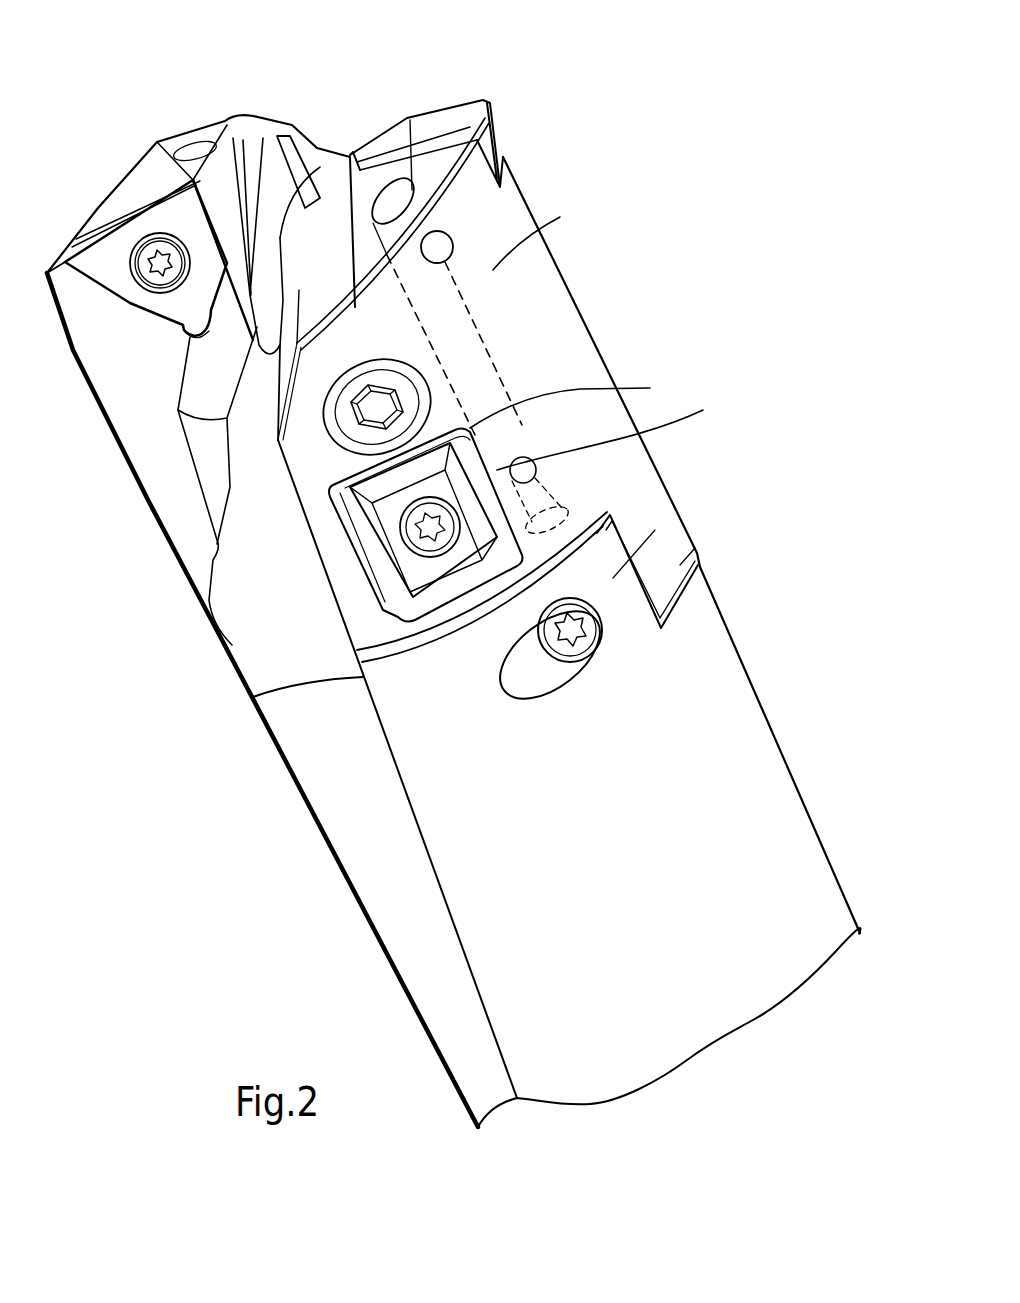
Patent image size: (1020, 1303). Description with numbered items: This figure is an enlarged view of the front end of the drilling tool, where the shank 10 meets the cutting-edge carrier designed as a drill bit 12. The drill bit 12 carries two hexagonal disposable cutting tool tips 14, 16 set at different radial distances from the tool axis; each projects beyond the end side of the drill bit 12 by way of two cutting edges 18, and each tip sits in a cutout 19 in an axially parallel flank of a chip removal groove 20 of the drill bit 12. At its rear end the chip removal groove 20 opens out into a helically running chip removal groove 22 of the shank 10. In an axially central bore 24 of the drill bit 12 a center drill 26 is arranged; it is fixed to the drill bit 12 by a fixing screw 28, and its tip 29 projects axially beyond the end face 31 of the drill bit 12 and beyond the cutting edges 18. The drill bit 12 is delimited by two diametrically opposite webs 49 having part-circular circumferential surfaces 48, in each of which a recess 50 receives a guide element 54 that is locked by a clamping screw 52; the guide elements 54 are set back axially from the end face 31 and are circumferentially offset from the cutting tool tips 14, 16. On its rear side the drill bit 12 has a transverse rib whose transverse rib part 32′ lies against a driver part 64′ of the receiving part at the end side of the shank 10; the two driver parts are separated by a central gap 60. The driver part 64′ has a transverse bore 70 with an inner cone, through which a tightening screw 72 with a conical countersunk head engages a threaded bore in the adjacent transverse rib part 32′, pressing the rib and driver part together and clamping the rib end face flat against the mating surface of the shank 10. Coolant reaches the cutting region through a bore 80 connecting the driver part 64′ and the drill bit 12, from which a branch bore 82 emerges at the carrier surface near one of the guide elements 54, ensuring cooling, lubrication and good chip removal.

The shank 10 is at (722, 745).
The drill bit 12 is at (567, 363).
The disposable cutting tool tip 14 is at (102, 275).
The disposable cutting tool tip 16 is at (487, 107).
The cutting edge 18 is at (93, 230).
The cutout 19 is at (393, 163).
The chip removal groove 20 is at (190, 540).
The chip removal groove 22 is at (347, 807).
The axially central bore 24 is at (257, 320).
The center drill 26 is at (267, 163).
The fixing screw 28 is at (397, 383).
The tip 29 is at (233, 140).
The end face 31 is at (340, 210).
The transverse rib part 32′ is at (697, 557).
The circumferential surface 48 is at (547, 233).
The web 49 is at (505, 331).
The recess 50 is at (576, 397).
The clamping screw 52 is at (440, 525).
The guide element 54 is at (541, 484).
The central gap 60 is at (677, 570).
The driver part 64′ is at (613, 577).
The transverse bore 70 is at (538, 673).
The tightening screw 72 is at (600, 660).
The bore 80 is at (493, 313).
The branch bore 82 is at (615, 430).